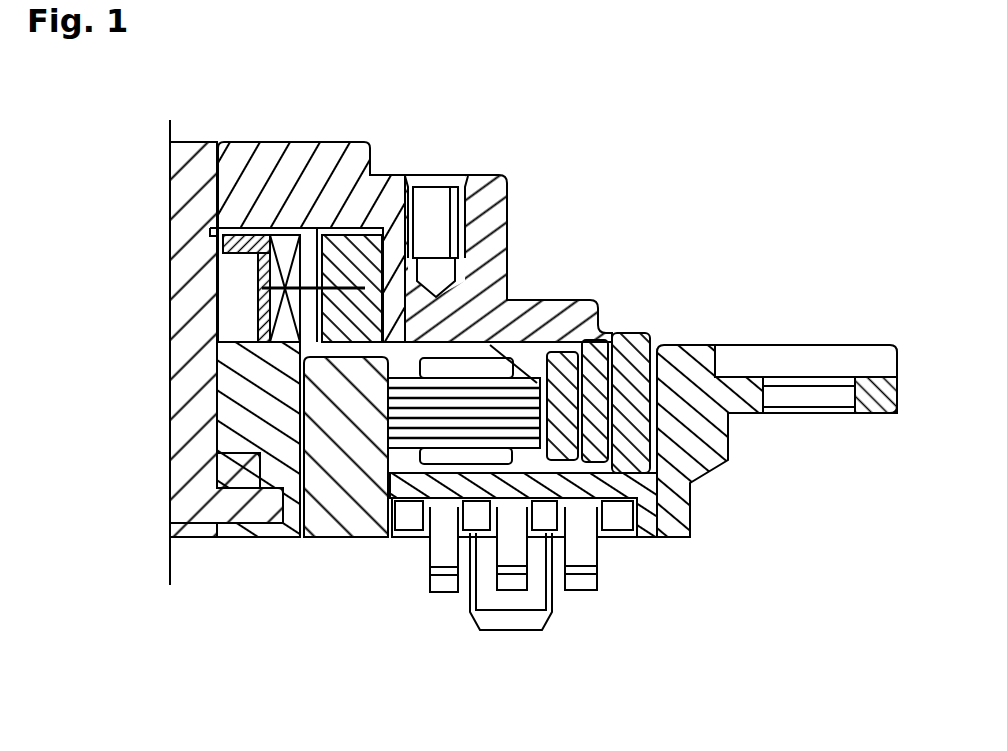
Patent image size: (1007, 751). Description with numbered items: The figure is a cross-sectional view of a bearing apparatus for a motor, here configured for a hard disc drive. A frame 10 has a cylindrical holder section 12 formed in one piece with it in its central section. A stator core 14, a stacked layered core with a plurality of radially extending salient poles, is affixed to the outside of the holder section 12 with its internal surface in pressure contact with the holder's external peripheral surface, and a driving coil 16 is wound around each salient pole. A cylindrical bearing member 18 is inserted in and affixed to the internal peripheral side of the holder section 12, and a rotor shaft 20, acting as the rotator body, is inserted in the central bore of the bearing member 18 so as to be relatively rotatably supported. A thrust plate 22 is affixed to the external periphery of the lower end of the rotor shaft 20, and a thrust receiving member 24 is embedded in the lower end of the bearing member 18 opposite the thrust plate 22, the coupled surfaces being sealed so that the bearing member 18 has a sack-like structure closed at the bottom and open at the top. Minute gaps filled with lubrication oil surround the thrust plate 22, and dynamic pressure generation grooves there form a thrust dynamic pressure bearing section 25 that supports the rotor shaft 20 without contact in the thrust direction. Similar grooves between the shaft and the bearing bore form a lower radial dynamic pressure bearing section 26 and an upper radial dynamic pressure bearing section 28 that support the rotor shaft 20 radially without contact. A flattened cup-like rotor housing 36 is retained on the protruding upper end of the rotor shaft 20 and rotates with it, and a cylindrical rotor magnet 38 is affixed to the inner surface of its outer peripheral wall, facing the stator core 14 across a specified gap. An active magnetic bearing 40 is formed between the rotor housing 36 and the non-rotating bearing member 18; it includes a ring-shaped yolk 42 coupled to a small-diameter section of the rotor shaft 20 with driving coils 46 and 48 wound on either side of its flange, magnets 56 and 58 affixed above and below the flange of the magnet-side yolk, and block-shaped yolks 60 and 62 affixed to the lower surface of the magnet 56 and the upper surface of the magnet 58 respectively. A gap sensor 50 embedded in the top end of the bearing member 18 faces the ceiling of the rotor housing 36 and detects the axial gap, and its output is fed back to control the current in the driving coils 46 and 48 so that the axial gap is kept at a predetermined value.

The frame 10 is at (688, 525).
The holder section 12 is at (346, 415).
The stator core 14 is at (548, 345).
The driving coil 16 is at (545, 318).
The bearing member 18 is at (275, 478).
The rotor shaft 20 is at (185, 337).
The thrust plate 22 is at (233, 475).
The thrust receiving member 24 is at (215, 511).
The thrust dynamic pressure bearing section 25 is at (237, 500).
The radial dynamic pressure bearing section 26 is at (215, 418).
The radial dynamic pressure bearing section 28 is at (216, 298).
The rotor housing 36 is at (497, 232).
The rotor magnet 38 is at (633, 325).
The active magnetic bearing 40 is at (320, 230).
The yolk 42 is at (240, 255).
The driving coil 46 is at (290, 318).
The driving coil 48 is at (280, 278).
The gap sensor 50 is at (229, 237).
The magnet 56 is at (492, 192).
The magnet 58 is at (413, 192).
The yolk 60 is at (478, 338).
The yolk 62 is at (375, 248).